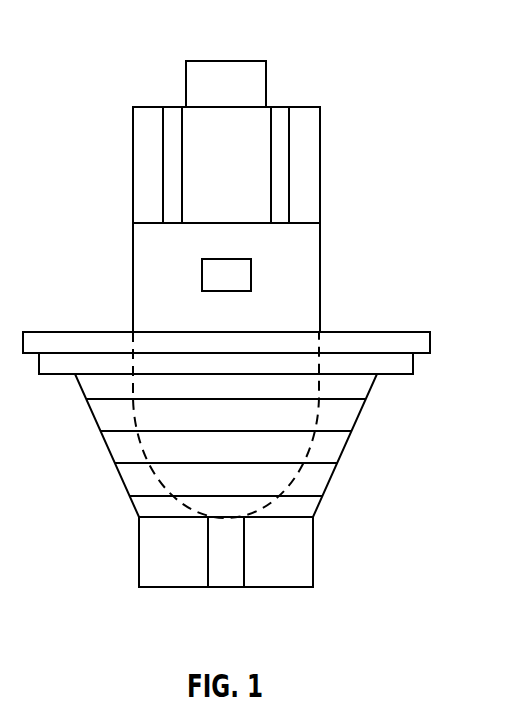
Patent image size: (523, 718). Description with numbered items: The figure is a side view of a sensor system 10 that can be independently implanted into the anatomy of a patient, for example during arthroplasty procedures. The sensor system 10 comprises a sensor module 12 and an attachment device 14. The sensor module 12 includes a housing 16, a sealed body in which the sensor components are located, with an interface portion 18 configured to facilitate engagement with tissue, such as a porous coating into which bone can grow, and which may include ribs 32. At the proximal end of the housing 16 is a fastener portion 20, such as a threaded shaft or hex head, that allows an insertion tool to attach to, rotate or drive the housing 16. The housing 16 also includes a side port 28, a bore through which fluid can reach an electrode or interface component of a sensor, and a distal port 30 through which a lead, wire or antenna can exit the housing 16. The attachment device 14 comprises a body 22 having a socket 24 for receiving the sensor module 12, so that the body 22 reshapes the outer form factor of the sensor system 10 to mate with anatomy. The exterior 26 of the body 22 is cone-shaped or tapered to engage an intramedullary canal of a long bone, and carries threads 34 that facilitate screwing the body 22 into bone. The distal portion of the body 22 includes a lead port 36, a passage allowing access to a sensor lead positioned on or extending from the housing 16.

The sensor system 10 is at (300, 80).
The sensor module 12 is at (152, 66).
The attachment device 14 is at (434, 390).
The housing 16 is at (143, 278).
The interface portion 18 is at (305, 185).
The fastener portion 20 is at (248, 67).
The body 22 is at (325, 475).
The socket 24 is at (162, 483).
The exterior 26 is at (315, 570).
The side port 28 is at (252, 274).
The distal port 30 is at (228, 518).
The ribs 32 is at (282, 148).
The threads 34 is at (110, 455).
The lead port 36 is at (208, 557).